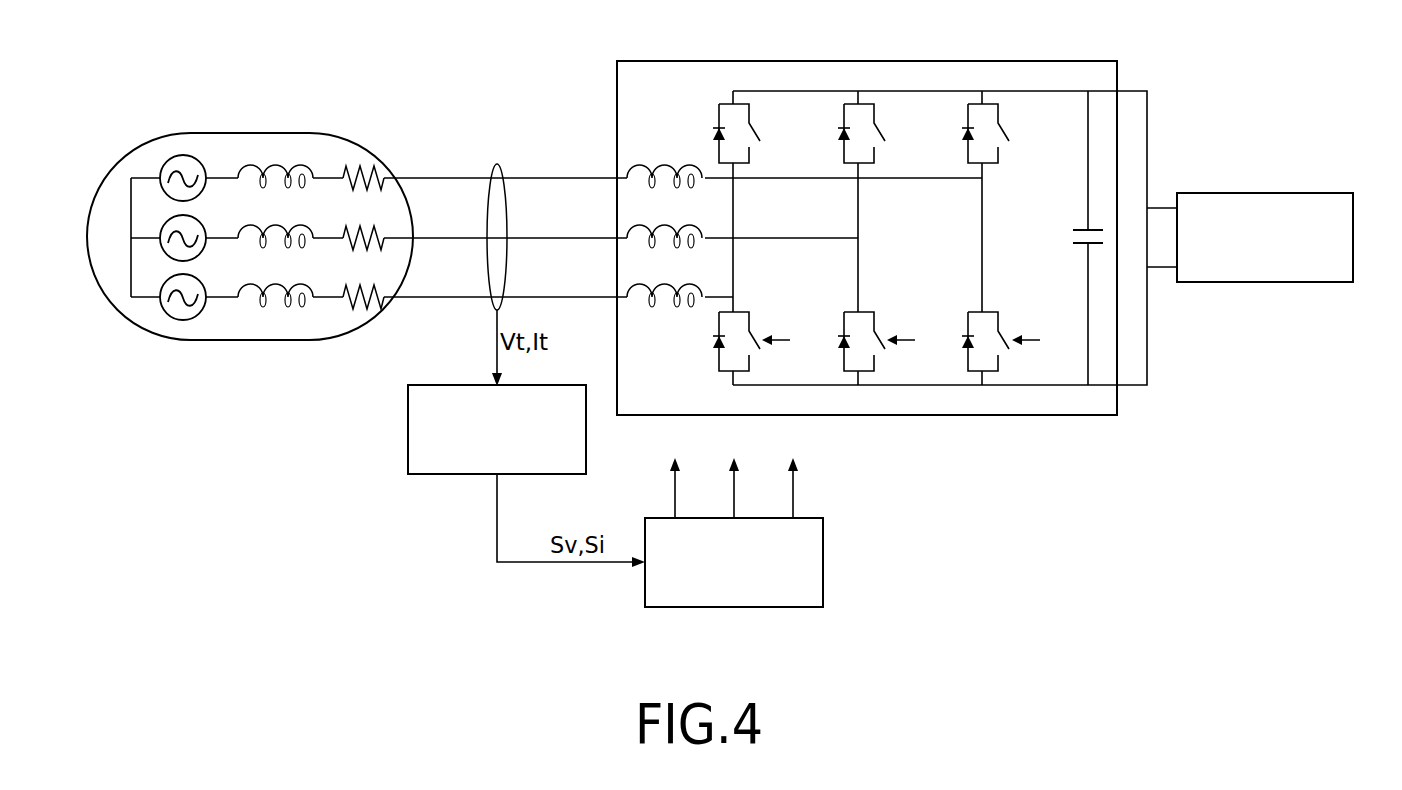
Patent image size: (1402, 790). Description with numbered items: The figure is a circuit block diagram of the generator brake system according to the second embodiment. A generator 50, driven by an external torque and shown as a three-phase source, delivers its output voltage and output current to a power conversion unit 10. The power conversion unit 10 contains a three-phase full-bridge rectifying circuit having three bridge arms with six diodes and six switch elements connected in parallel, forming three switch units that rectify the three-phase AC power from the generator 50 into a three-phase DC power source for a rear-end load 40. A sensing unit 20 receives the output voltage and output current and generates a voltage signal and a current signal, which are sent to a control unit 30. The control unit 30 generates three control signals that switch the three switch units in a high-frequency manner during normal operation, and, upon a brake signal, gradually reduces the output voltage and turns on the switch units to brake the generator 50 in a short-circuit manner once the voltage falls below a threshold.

The power conversion unit 10 is at (912, 67).
The sensing unit 20 is at (468, 467).
The control unit 30 is at (733, 600).
The rear-end load 40 is at (1265, 200).
The generator 50 is at (250, 140).